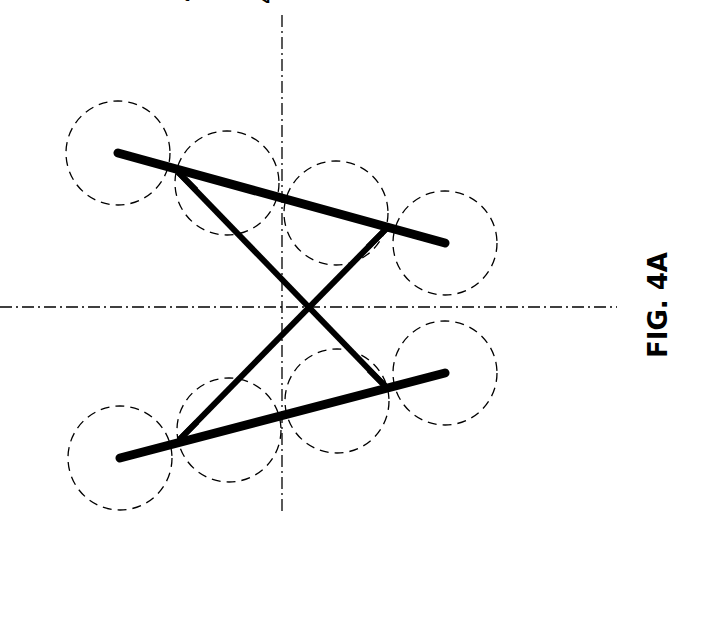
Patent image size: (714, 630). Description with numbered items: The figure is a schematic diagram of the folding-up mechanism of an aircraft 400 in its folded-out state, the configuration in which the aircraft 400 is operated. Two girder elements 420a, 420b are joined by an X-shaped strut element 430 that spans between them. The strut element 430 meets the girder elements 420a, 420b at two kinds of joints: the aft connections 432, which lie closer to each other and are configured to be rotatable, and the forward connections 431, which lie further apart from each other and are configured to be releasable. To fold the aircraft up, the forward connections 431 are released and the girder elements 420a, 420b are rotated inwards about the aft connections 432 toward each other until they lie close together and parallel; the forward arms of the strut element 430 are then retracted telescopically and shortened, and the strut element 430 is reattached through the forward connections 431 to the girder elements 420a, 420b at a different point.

The aircraft 400 is at (582, 111).
The girder element 420a is at (282, 448).
The girder element 420b is at (275, 147).
The X-shaped strut element 430 is at (331, 369).
The forward connection 431 is at (118, 306).
The aft connection 432 is at (475, 330).